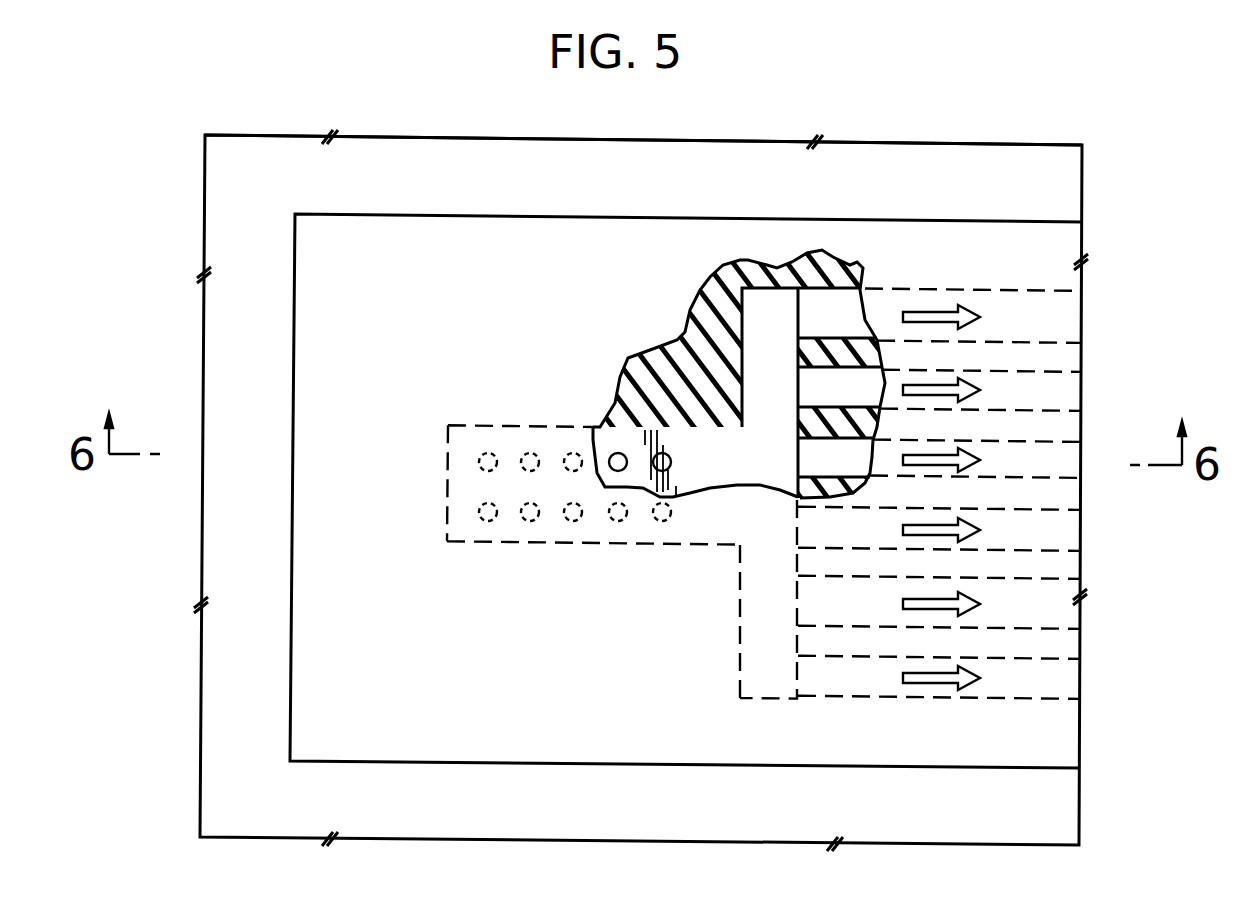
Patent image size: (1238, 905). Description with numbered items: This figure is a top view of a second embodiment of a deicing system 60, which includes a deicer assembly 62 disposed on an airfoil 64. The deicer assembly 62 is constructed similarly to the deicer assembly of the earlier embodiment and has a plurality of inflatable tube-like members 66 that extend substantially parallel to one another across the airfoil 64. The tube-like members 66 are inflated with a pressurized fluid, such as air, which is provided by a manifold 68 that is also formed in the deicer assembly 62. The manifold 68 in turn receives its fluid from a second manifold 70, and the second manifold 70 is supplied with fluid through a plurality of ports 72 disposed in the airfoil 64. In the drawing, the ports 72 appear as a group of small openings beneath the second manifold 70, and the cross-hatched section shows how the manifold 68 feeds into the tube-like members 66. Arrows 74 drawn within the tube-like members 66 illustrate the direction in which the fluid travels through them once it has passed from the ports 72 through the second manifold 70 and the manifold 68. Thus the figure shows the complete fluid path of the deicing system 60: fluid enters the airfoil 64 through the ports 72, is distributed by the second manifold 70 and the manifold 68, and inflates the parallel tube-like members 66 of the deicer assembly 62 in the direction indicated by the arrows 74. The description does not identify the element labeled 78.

The deicing system 60 is at (1102, 222).
The deicer assembly 62 is at (1085, 738).
The airfoil 64 is at (918, 160).
The inflatable tube-like members 66 is at (845, 320).
The manifold 68 is at (768, 308).
The second manifold 70 is at (613, 440).
The ports 72 is at (483, 517).
The arrows 74 is at (937, 310).
The flow lines 78 is at (1065, 357).